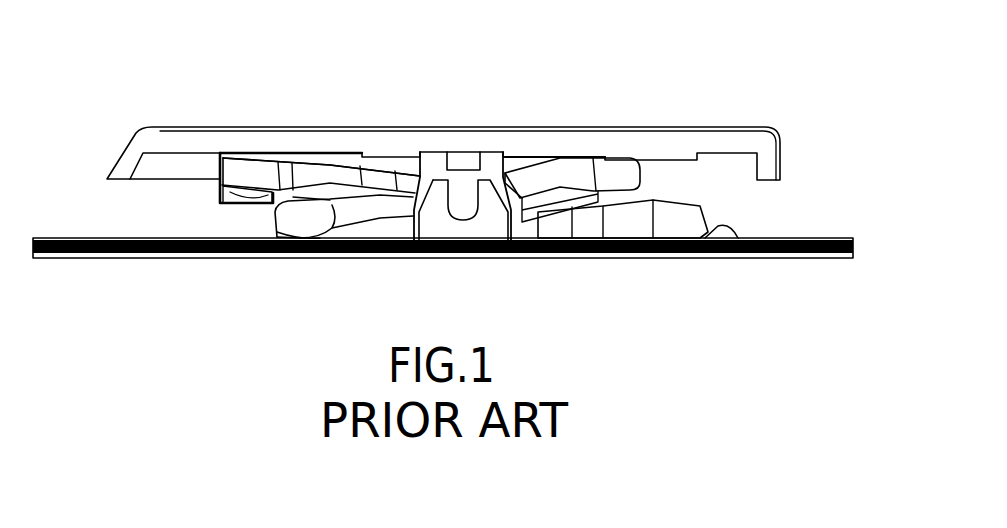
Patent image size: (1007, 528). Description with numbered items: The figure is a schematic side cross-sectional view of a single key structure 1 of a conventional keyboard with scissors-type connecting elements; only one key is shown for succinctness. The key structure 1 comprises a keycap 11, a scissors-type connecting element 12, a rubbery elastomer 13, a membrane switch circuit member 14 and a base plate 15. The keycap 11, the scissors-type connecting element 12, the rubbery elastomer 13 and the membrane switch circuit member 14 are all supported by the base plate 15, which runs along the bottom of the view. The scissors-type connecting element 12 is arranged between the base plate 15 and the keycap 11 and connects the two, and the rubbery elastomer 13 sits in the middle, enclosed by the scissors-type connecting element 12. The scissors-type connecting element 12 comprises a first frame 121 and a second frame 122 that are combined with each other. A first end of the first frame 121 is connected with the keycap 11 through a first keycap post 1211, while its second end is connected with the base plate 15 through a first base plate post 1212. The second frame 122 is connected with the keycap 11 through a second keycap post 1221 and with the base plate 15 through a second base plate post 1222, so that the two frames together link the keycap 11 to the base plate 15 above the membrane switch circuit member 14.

The key structure 1 is at (636, 63).
The keycap 11 is at (400, 140).
The scissors-type connecting element 12 is at (235, 172).
The first frame 121 is at (330, 180).
The second frame 122 is at (370, 205).
The first keycap post 1211 is at (620, 167).
The first base plate post 1212 is at (300, 218).
The second keycap post 1221 is at (227, 193).
The second base plate post 1222 is at (698, 228).
The rubbery elastomer 13 is at (492, 165).
The membrane switch circuit member 14 is at (710, 245).
The base plate 15 is at (645, 245).